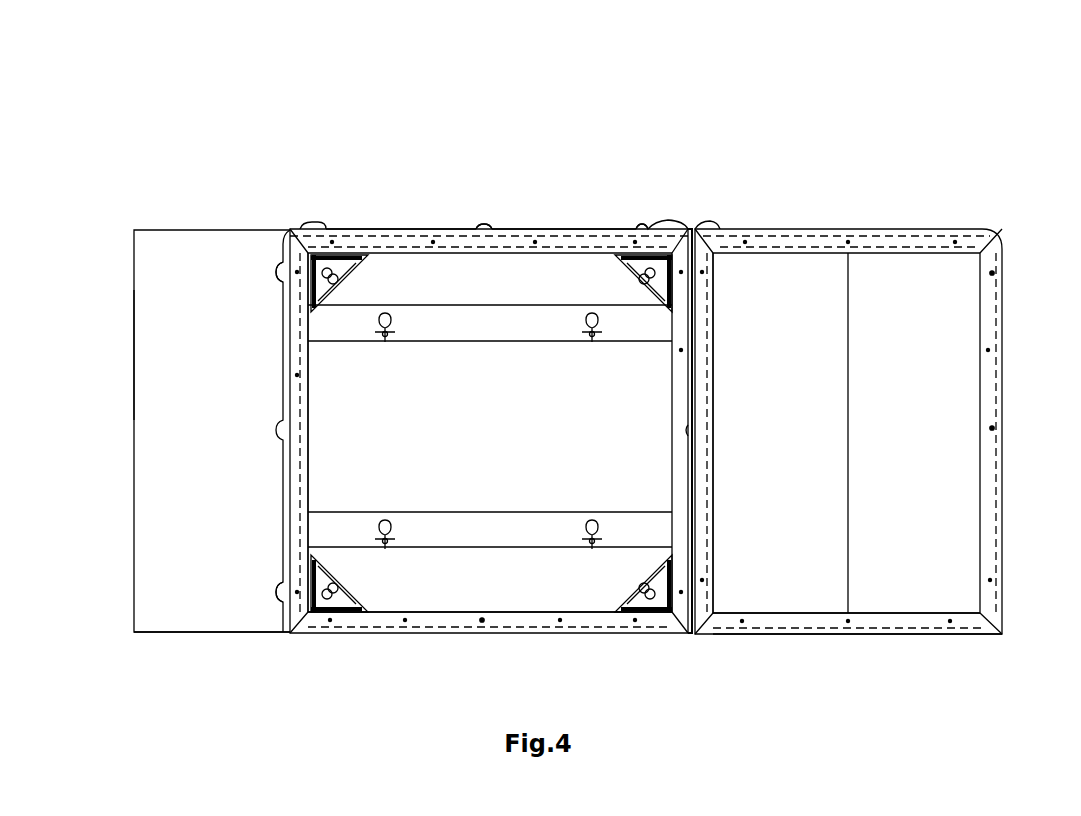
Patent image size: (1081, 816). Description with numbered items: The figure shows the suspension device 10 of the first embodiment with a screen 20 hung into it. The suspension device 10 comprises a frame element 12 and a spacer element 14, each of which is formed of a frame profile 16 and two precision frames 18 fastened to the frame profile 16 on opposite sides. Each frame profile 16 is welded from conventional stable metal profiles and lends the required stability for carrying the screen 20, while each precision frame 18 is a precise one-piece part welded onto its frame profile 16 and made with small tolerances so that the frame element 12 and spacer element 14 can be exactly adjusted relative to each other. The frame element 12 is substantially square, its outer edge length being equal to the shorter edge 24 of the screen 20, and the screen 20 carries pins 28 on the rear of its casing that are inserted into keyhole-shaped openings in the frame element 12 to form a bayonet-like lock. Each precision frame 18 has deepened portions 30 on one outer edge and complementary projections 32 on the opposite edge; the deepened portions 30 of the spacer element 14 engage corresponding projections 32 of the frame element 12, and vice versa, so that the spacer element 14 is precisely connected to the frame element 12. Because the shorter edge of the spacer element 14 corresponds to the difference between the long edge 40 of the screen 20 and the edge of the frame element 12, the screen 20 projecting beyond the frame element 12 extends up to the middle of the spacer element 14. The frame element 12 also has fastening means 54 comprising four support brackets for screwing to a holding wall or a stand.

The suspension device 10 is at (790, 116).
The frame element 12 is at (415, 215).
The spacer element 14 is at (947, 220).
The frame profile 16 is at (302, 632).
The precision frame 18 is at (580, 226).
The screen 20 is at (193, 222).
The shorter edge 24 is at (134, 350).
The pin 28 is at (385, 545).
The deepened portion 30 is at (482, 226).
The projection 32 is at (1003, 275).
The long edge 40 is at (235, 635).
The fastening means 54 is at (332, 592).